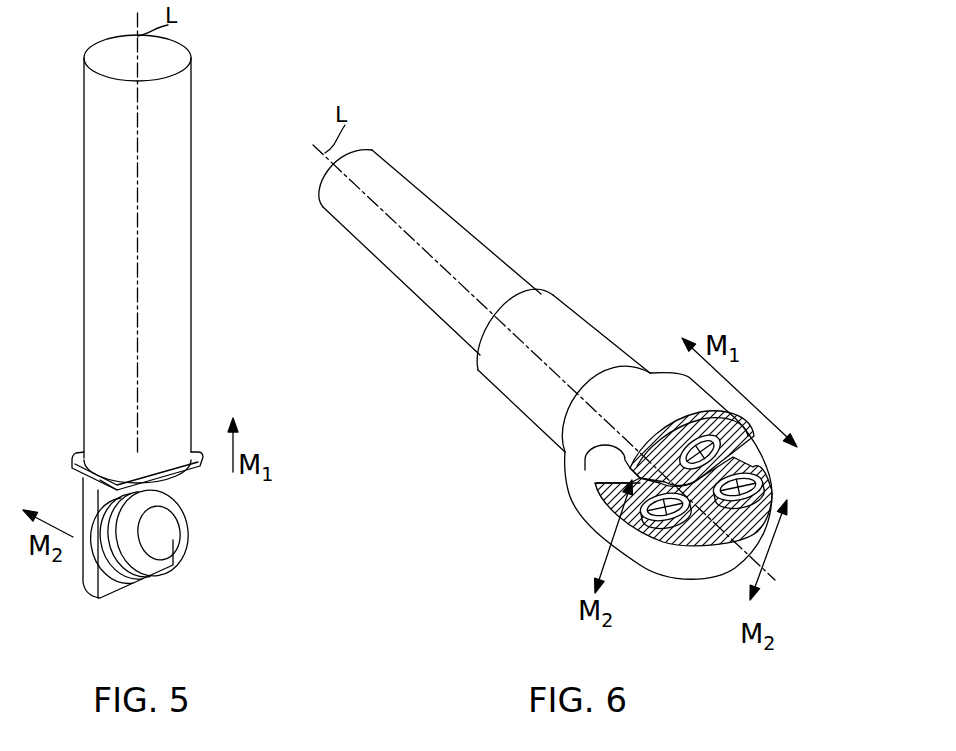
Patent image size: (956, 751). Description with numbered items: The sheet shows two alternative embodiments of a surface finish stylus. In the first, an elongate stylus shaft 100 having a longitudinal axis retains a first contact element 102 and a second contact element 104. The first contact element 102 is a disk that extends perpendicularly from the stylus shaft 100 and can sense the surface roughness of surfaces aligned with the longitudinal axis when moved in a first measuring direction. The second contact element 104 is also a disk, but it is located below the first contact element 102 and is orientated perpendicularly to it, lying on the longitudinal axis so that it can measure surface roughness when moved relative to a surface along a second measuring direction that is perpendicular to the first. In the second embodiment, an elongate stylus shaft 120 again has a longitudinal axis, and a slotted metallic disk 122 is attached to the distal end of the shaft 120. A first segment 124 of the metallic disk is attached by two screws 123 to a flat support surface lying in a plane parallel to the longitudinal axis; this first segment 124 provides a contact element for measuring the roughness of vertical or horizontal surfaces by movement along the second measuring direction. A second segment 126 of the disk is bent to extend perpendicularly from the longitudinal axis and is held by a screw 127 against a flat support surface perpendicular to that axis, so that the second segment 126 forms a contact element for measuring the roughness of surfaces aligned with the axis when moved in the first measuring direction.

In FIG. 5, the stylus shaft 100 is at (177, 280).
In FIG. 5, the first contact element 102 is at (195, 460).
In FIG. 5, the second contact element 104 is at (100, 565).
In FIG. 6, the stylus shaft 120 is at (428, 207).
In FIG. 6, the slotted metallic disk 122 is at (781, 465).
In FIG. 6, the screws 123 is at (752, 483).
In FIG. 6, the first segment 124 is at (743, 527).
In FIG. 6, the second segment 126 is at (723, 430).
In FIG. 6, the screw 127 is at (745, 408).